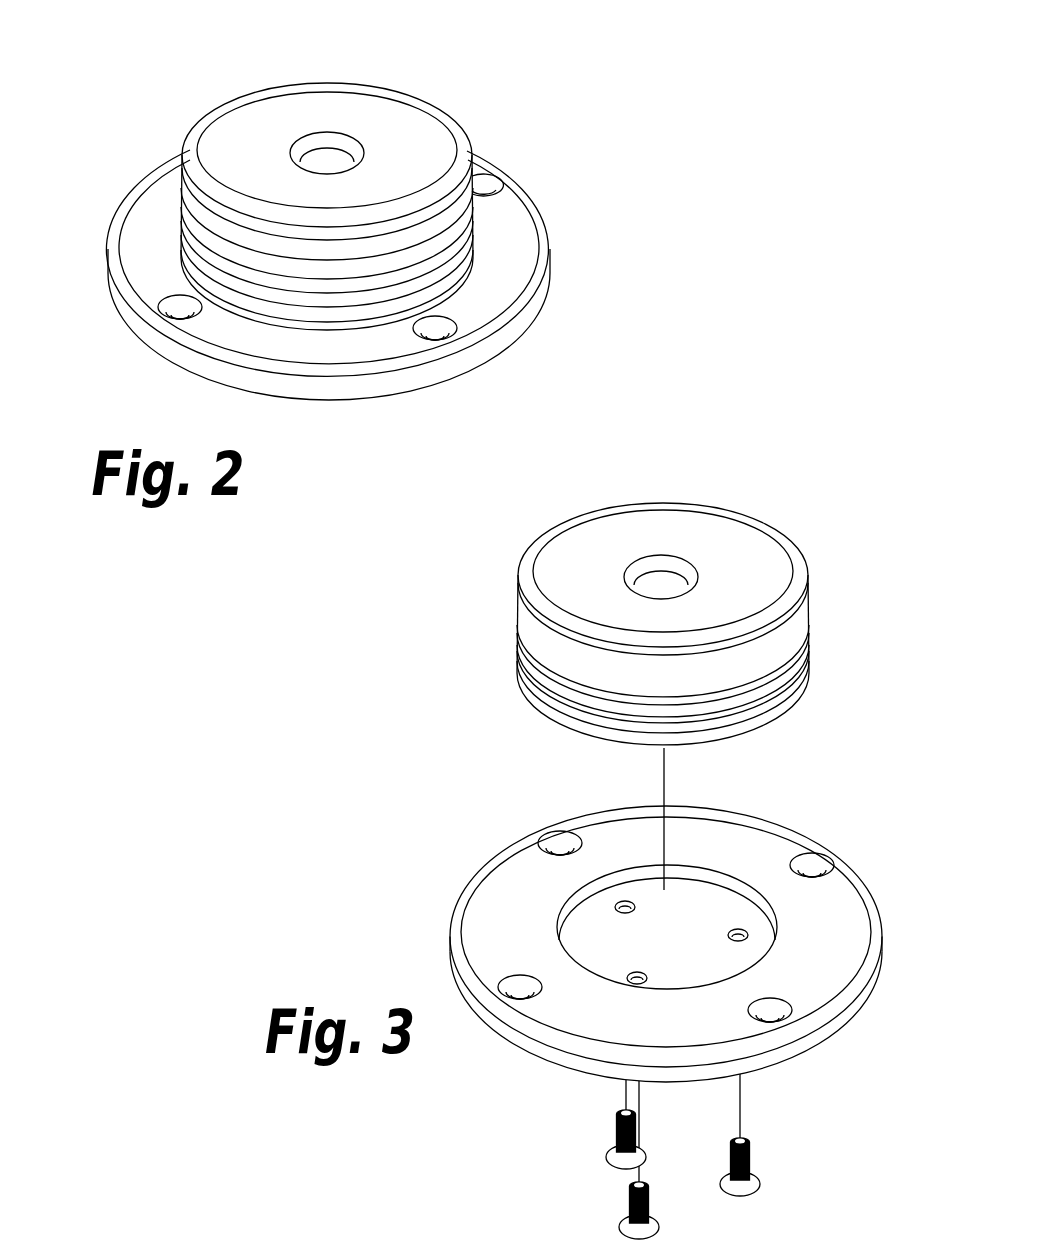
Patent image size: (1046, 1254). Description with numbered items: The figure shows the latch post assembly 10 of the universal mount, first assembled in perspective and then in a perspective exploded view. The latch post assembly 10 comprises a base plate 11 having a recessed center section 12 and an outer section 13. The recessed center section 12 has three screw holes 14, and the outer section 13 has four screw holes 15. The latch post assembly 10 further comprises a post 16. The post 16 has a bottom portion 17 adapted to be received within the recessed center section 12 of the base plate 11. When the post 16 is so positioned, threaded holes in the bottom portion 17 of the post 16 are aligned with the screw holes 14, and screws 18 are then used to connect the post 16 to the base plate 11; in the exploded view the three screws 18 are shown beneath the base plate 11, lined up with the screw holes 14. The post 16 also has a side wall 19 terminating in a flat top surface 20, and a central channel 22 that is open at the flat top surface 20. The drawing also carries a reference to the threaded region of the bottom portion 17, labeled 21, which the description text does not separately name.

In FIG. 2, the latch post assembly 10 is at (524, 165).
In FIG. 2, the base plate 11 is at (103, 220).
In FIG. 3, the base plate 11 is at (490, 1045).
In FIG. 3, the recessed center section 12 is at (698, 907).
In FIG. 3, the outer section 13 is at (508, 905).
In FIG. 3, the screw holes 14 is at (617, 910).
In FIG. 2, the screw holes 15 is at (330, 257).
In FIG. 3, the screw holes 15 is at (568, 843).
In FIG. 2, the post 16 is at (202, 127).
In FIG. 3, the post 16 is at (510, 548).
In FIG. 3, the bottom portion 17 is at (548, 710).
In FIG. 3, the screws 18 is at (617, 1133).
In FIG. 3, the side wall 19 is at (795, 610).
In FIG. 3, the flat top surface 20 is at (705, 532).
In FIG. 3, the thread 21 is at (530, 665).
In FIG. 2, the central channel 22 is at (328, 155).
In FIG. 3, the central channel 22 is at (652, 585).